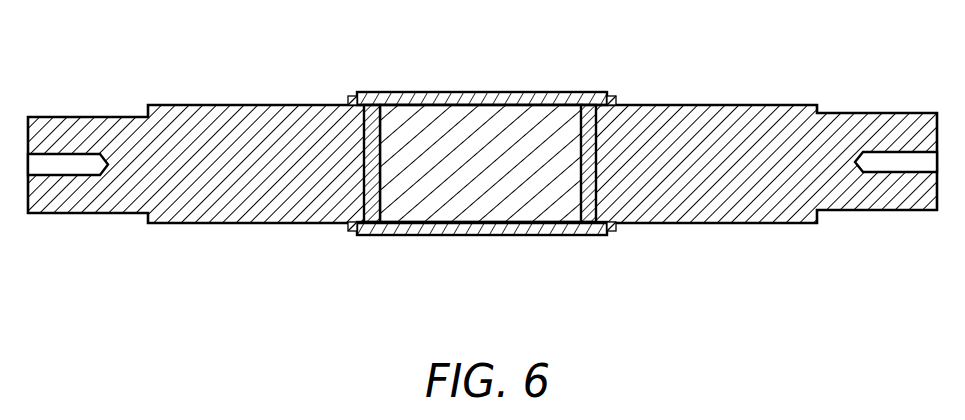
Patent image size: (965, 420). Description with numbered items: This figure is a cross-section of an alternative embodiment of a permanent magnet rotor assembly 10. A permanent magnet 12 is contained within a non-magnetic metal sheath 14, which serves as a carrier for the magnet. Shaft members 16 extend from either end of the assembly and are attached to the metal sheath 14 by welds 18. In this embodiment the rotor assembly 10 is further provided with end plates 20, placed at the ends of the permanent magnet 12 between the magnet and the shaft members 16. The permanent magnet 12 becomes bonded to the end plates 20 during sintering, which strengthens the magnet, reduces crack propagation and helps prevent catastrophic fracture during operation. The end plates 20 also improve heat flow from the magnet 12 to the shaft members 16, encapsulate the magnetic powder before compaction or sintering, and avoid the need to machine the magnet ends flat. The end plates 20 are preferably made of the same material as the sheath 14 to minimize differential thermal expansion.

The permanent magnet rotor assembly 10 is at (482, 163).
The permanent magnet 12 is at (496, 213).
The non-magnetic metal sheath 14 is at (488, 92).
The shaft members 16 is at (192, 226).
The welds 18 is at (348, 99).
The end plates 20 is at (372, 215).